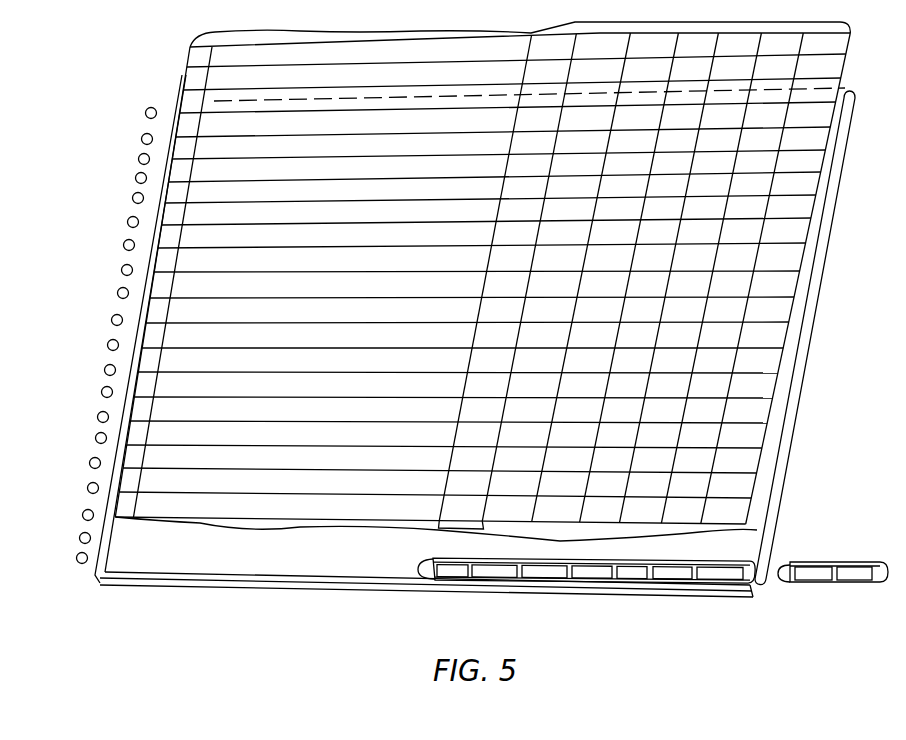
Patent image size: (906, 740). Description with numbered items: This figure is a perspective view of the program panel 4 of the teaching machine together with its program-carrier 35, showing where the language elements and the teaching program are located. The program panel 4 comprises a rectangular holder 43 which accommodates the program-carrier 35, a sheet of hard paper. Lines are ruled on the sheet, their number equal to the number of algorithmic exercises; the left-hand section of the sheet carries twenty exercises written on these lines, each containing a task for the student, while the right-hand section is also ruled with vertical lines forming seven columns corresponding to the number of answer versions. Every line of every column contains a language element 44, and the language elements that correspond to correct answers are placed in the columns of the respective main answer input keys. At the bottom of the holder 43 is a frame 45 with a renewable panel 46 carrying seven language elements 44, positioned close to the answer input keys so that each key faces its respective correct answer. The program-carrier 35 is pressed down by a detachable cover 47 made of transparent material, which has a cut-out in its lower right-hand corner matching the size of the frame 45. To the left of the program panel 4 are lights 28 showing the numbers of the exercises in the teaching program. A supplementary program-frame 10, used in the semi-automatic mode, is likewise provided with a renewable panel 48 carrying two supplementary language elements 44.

The program panel 4 is at (155, 556).
The supplementary program-frame 10 is at (812, 582).
The lights 28 is at (117, 294).
The program-carrier 35 is at (287, 516).
The rectangular holder 43 is at (857, 110).
The language element 44 is at (728, 392).
The frame 45 is at (568, 579).
The renewable panel 46 is at (430, 580).
The detachable cover 47 is at (441, 529).
The renewable panel 48 is at (787, 576).